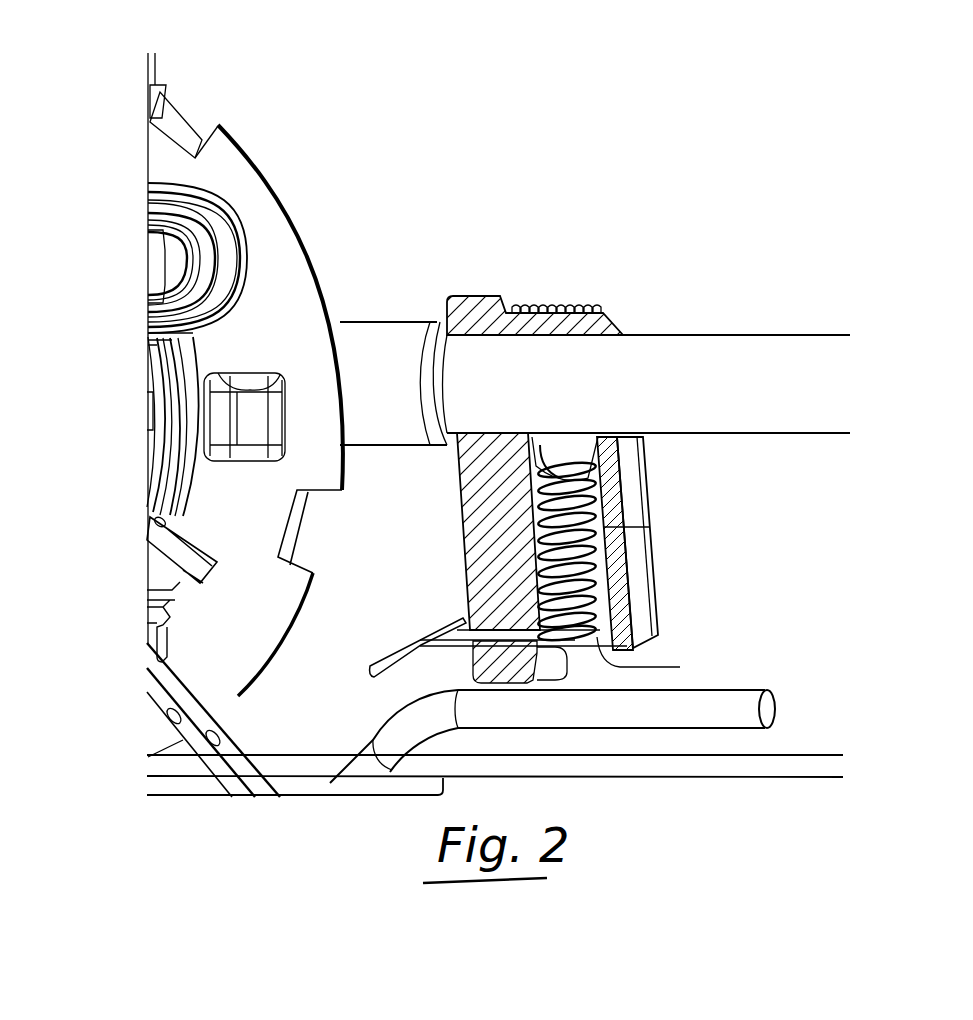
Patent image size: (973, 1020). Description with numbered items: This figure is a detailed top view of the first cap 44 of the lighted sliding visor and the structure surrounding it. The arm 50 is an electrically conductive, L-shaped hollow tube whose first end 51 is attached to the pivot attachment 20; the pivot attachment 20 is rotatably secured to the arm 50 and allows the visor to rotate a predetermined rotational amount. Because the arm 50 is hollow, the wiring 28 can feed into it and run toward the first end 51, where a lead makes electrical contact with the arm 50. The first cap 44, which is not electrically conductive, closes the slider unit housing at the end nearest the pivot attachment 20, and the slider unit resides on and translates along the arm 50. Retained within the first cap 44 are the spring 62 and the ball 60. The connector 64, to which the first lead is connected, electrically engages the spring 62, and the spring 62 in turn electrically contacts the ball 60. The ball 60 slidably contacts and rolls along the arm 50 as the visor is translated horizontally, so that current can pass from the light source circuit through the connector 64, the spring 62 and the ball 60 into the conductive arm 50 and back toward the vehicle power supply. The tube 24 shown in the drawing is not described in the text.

The pivot attachment 20 is at (238, 697).
The tube 24 is at (777, 715).
The wiring 28 is at (236, 782).
The first cap 44 is at (498, 296).
The arm 50 is at (752, 333).
The first end 51 is at (394, 322).
The ball 60 is at (640, 437).
The spring 62 is at (603, 527).
The connector 64 is at (417, 640).